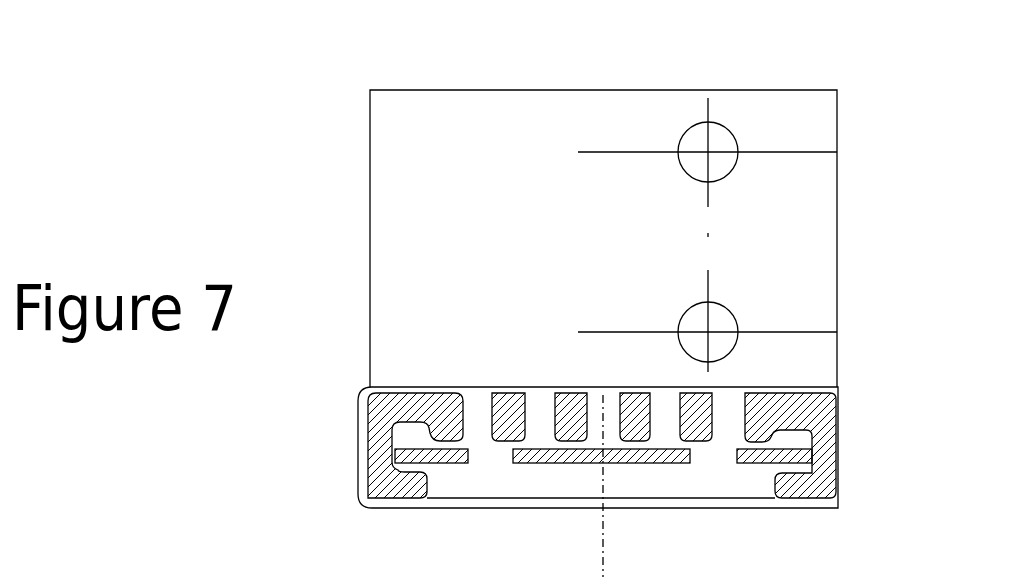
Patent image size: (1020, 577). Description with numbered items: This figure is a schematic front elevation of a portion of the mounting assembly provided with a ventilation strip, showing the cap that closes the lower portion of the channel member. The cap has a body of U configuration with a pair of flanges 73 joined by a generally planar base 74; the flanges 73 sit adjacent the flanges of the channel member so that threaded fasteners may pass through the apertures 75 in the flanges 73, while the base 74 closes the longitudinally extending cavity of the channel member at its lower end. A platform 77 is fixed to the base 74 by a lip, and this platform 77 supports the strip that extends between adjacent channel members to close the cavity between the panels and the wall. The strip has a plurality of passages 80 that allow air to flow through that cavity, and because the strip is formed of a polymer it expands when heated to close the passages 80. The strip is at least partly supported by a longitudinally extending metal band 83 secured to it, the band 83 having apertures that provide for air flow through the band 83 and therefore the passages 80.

The passages 80 is at (513, 88).
The apertures 75 is at (740, 318).
The flanges 73 is at (462, 252).
The base 74 is at (765, 376).
The platform 77 is at (707, 508).
The metal band 83 is at (535, 466).